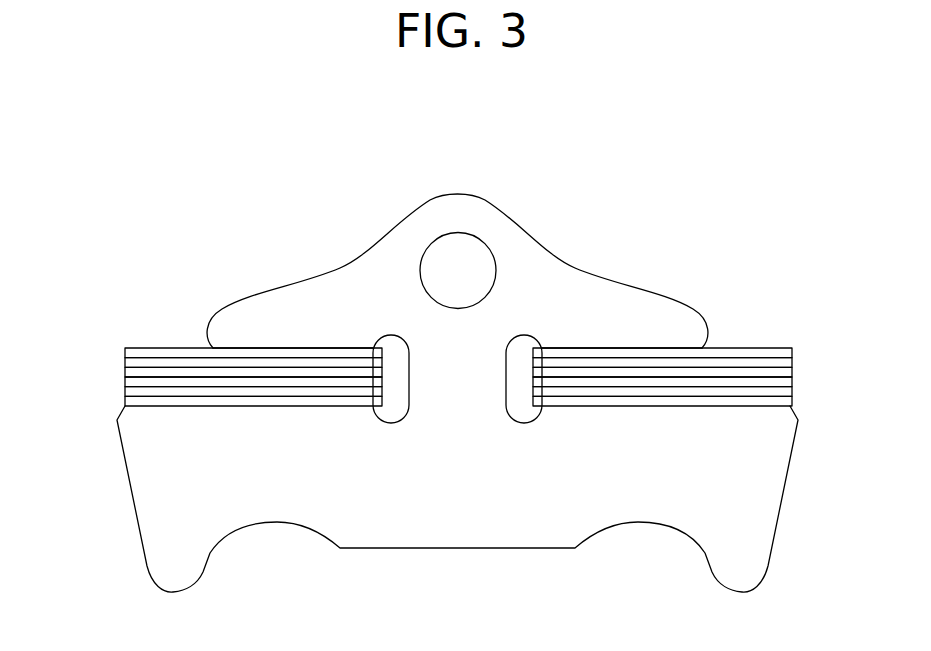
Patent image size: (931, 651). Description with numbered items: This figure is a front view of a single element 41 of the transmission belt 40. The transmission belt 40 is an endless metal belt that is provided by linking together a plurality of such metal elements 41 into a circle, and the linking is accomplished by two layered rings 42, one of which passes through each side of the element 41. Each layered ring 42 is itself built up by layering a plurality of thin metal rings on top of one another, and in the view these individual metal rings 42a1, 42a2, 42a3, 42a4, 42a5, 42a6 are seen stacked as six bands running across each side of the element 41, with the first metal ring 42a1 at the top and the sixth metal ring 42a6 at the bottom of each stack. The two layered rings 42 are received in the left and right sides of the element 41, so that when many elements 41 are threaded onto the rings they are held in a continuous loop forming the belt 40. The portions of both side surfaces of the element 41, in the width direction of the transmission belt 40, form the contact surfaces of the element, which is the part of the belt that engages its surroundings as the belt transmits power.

The transmission belt 40 is at (543, 159).
The element 41 is at (542, 245).
The layered ring 42 is at (155, 348).
The metal ring 42a1 is at (125, 352).
The metal ring 42a2 is at (125, 363).
The metal ring 42a3 is at (125, 371).
The metal ring 42a4 is at (125, 382).
The metal ring 42a5 is at (125, 389).
The metal ring 42a6 is at (125, 402).